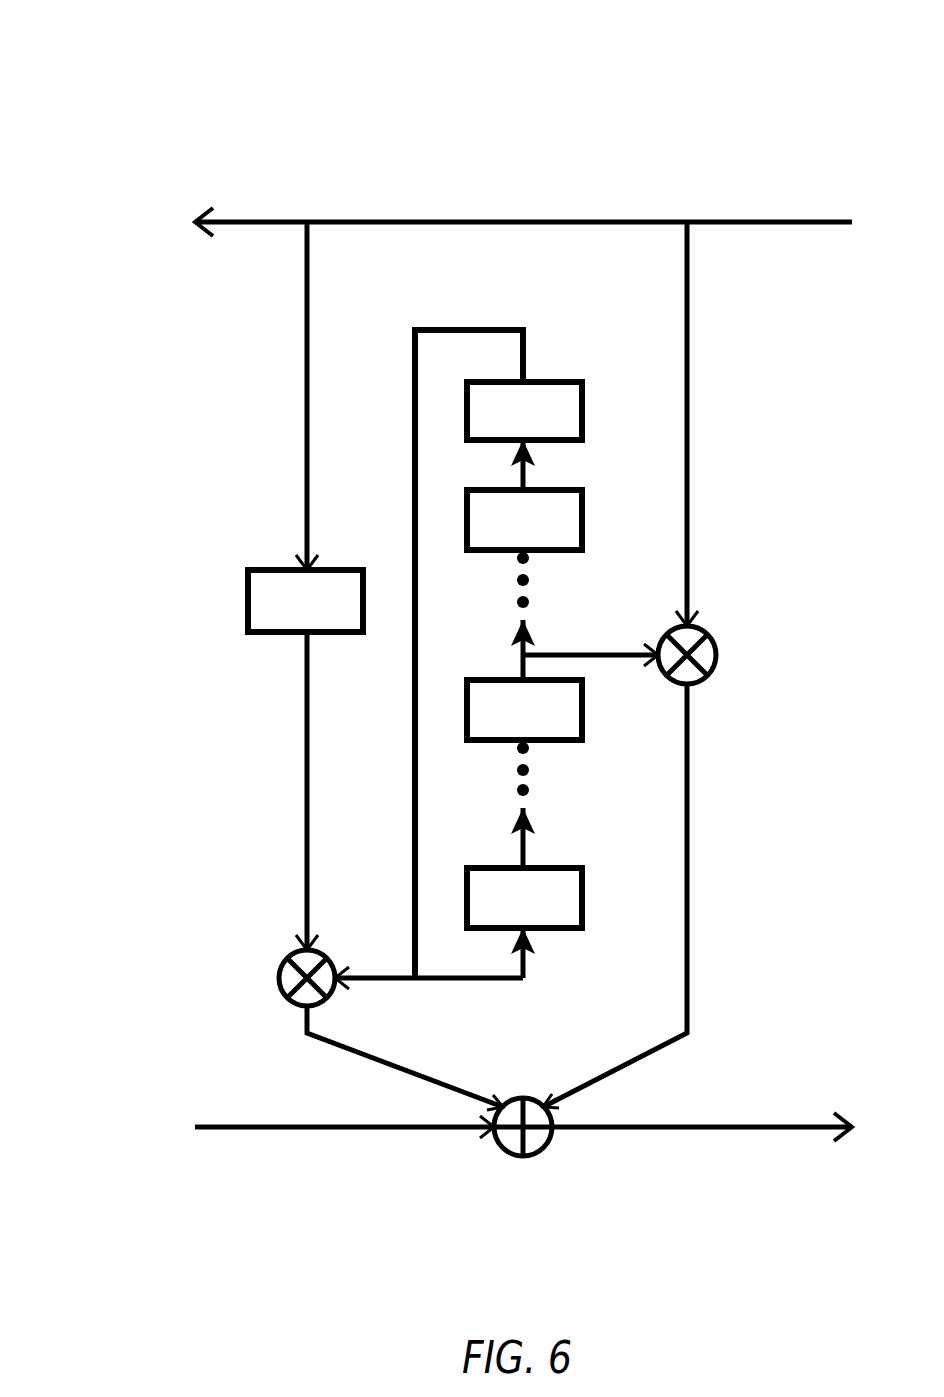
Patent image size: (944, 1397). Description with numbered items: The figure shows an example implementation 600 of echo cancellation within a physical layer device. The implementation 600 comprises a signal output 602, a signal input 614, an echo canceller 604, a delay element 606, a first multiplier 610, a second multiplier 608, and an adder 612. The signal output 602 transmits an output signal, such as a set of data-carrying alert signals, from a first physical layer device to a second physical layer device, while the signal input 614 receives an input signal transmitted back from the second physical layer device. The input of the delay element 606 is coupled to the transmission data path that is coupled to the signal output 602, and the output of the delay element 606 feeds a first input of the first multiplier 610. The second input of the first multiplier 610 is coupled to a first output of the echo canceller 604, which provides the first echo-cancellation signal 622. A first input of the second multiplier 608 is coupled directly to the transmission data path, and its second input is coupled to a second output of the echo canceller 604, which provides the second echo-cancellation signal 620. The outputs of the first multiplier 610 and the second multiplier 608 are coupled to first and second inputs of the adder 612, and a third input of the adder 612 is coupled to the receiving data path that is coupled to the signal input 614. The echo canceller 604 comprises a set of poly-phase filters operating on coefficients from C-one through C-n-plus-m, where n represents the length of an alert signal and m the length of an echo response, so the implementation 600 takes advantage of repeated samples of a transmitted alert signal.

The implementation of echo cancellation 600 is at (100, 86).
The signal output 602 is at (200, 185).
The echo canceller 604 is at (560, 345).
The delay element 606 is at (225, 558).
The second multiplier 608 is at (738, 630).
The first multiplier 610 is at (268, 950).
The adder 612 is at (548, 1077).
The signal input 614 is at (140, 1093).
The second echo-cancellation signal 620 is at (605, 629).
The first echo-cancellation signal 622 is at (400, 1002).